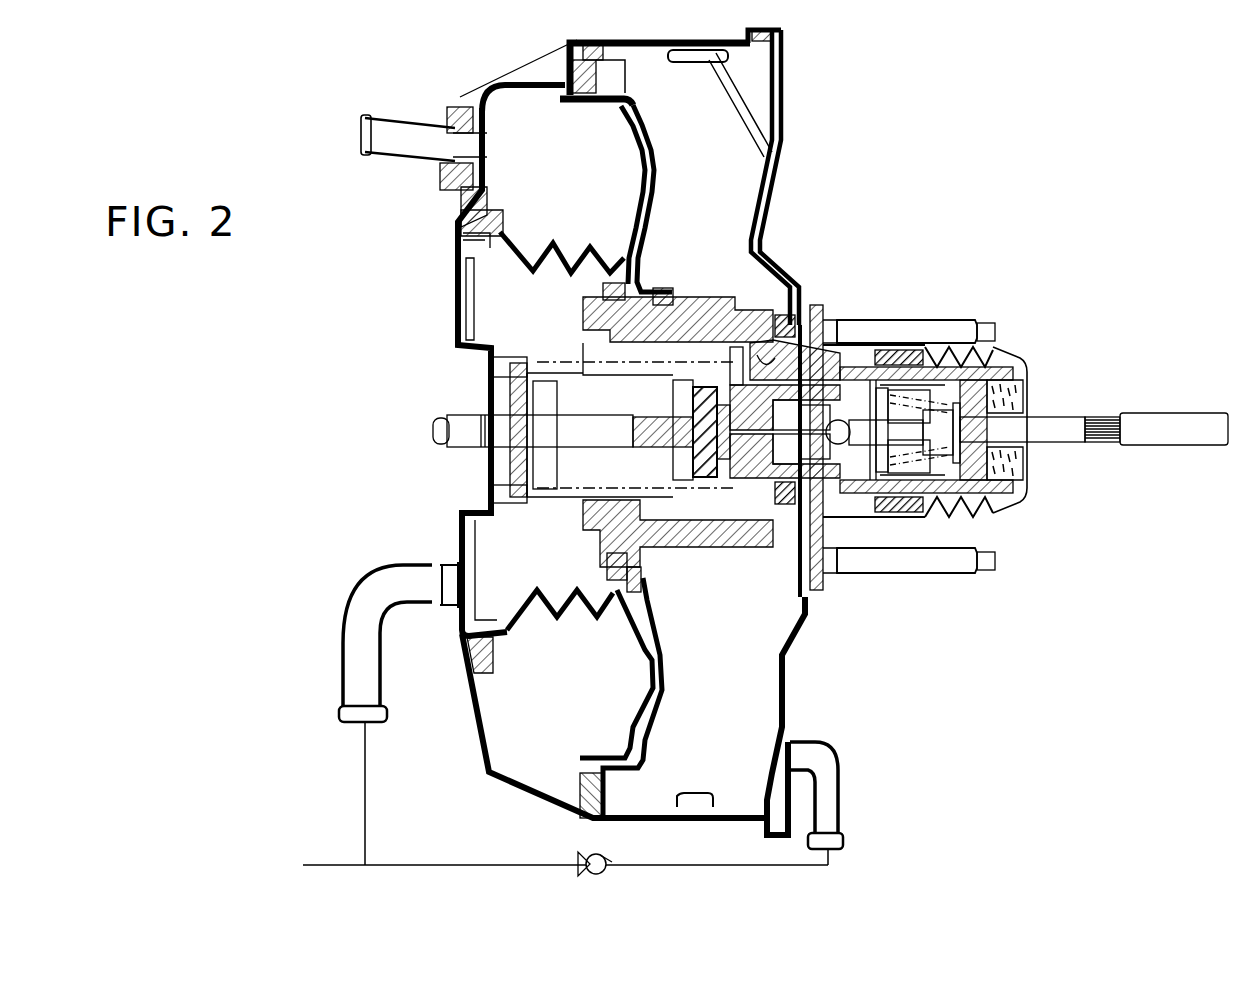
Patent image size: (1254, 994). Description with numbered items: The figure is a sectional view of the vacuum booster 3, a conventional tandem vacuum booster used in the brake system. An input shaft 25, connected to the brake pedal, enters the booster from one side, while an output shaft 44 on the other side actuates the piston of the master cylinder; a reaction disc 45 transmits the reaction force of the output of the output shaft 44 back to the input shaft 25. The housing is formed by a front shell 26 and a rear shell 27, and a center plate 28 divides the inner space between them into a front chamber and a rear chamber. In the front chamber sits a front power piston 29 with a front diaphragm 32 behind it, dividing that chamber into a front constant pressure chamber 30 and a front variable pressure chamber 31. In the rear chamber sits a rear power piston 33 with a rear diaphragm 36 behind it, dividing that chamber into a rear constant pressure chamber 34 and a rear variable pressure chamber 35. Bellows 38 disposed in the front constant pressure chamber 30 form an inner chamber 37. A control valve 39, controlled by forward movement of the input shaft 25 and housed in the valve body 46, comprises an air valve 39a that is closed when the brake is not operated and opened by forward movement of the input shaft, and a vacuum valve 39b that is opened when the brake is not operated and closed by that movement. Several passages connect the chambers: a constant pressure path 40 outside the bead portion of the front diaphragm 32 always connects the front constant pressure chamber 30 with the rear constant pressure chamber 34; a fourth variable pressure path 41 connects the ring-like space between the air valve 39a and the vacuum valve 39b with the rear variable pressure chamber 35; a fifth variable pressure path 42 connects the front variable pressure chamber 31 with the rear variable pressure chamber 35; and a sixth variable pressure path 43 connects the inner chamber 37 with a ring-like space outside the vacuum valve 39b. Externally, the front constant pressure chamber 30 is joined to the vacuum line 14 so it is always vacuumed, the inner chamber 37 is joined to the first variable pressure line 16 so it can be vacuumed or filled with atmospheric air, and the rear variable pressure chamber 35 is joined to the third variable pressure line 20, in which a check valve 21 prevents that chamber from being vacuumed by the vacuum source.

The vacuum booster 3 is at (905, 142).
The vacuum line 14 is at (318, 127).
The first variable pressure line 16 is at (363, 773).
The third variable pressure line 20 is at (480, 868).
The check valve 21 is at (605, 872).
The input shaft 25 is at (1067, 437).
The front shell 26 is at (481, 740).
The rear shell 27 is at (806, 623).
The center plate 28 is at (640, 121).
The front power piston 29 is at (616, 114).
The front constant pressure chamber 30 is at (533, 191).
The front variable pressure chamber 31 is at (626, 282).
The front diaphragm 32 is at (580, 95).
The rear power piston 33 is at (713, 62).
The rear constant pressure chamber 34 is at (685, 191).
The rear variable pressure chamber 35 is at (770, 250).
The rear diaphragm 36 is at (678, 55).
The inner chamber 37 is at (539, 347).
The bellows 38 is at (527, 604).
The control valve 39 is at (978, 262).
The air valve 39a is at (888, 395).
The vacuum valve 39b is at (872, 385).
The constant pressure path 40 is at (556, 788).
The fourth variable pressure path 41 is at (840, 513).
The fifth variable pressure path 42 is at (740, 520).
The sixth variable pressure path 43 is at (770, 355).
The output shaft 44 is at (597, 433).
The reaction disc 45 is at (697, 400).
The valve body 46 is at (697, 313).